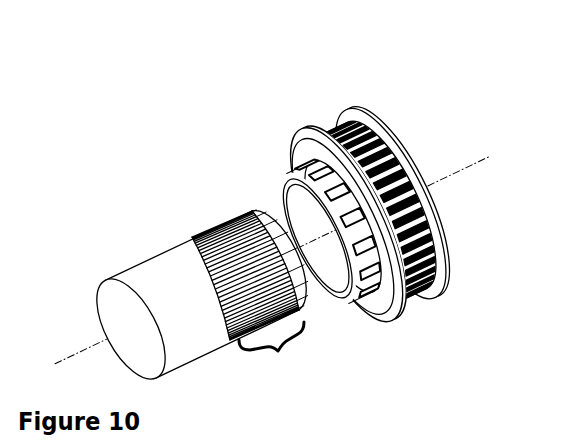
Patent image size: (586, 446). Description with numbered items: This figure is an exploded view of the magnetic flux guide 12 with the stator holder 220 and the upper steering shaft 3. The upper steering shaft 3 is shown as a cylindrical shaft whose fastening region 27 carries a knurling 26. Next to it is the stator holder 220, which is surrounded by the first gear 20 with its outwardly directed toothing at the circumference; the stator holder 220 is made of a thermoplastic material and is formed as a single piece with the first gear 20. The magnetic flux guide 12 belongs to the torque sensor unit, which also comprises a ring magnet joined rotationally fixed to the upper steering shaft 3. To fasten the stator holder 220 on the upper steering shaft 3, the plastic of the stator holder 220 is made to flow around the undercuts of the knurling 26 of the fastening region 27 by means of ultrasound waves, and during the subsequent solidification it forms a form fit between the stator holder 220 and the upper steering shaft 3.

The upper steering shaft 3 is at (213, 322).
The knurling 26 is at (229, 213).
The fastening region 27 is at (272, 351).
The magnetic flux guide 12 is at (343, 120).
The first gear 20 is at (413, 293).
The stator holder 220 is at (360, 300).